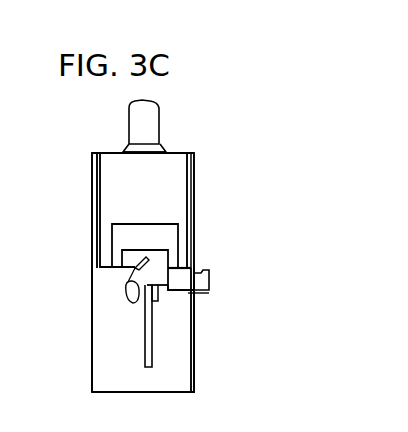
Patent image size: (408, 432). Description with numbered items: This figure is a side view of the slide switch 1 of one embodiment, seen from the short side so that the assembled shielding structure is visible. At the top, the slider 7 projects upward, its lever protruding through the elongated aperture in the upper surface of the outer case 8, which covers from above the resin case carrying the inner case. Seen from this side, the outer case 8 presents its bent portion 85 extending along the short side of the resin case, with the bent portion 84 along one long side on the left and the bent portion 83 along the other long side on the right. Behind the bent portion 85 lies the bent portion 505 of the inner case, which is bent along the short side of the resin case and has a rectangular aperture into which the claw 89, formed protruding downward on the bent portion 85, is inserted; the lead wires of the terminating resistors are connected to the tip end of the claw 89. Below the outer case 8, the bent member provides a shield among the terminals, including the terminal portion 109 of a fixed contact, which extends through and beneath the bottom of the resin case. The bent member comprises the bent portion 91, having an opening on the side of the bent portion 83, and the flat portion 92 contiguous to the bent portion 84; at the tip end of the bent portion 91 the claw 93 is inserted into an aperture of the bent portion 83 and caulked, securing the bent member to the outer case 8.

The slide switch 1 is at (93, 114).
The slider 7 is at (153, 134).
The outer case 8 is at (199, 157).
The bent portion 84 is at (94, 175).
The bent portion 85 is at (178, 184).
The flat portion 92 is at (93, 222).
The bent portion 505 is at (172, 237).
The claw 93 is at (208, 280).
The claw 89 is at (163, 286).
The bent portion 91 is at (102, 329).
The bent portion 83 is at (194, 358).
The terminal portion 109 is at (144, 356).